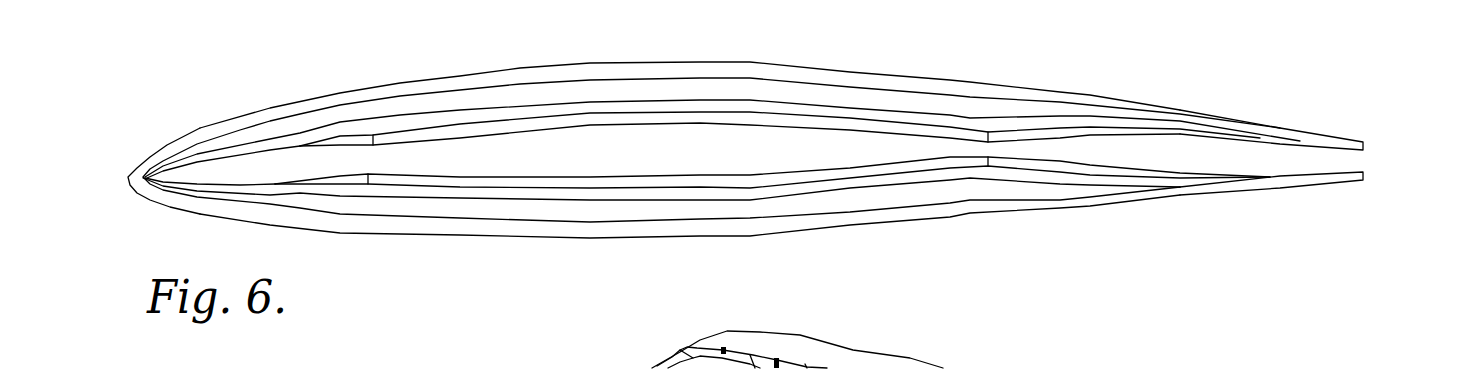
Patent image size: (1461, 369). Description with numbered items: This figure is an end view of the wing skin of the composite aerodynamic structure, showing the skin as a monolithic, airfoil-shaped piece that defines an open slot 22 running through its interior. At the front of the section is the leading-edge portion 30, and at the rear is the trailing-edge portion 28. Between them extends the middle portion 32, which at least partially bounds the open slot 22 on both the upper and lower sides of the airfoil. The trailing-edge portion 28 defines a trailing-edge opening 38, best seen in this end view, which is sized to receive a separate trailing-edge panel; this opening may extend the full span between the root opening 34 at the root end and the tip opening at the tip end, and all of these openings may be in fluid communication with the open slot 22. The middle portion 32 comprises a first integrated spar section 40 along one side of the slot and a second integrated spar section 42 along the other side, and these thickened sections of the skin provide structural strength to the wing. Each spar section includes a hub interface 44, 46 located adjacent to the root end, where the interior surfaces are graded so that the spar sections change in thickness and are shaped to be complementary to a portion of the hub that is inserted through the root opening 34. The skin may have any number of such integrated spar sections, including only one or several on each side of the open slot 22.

The open slot 22 is at (533, 153).
The trailing-edge portion 28 is at (1287, 127).
The leading-edge portion 30 is at (157, 149).
The middle portion 32 is at (607, 62).
The root opening 34 is at (323, 110).
The trailing-edge opening 38 is at (1367, 162).
The first integrated spar section 40 is at (815, 117).
The second integrated spar section 42 is at (617, 195).
The hub interface 44 is at (710, 92).
The hub interface 46 is at (823, 200).